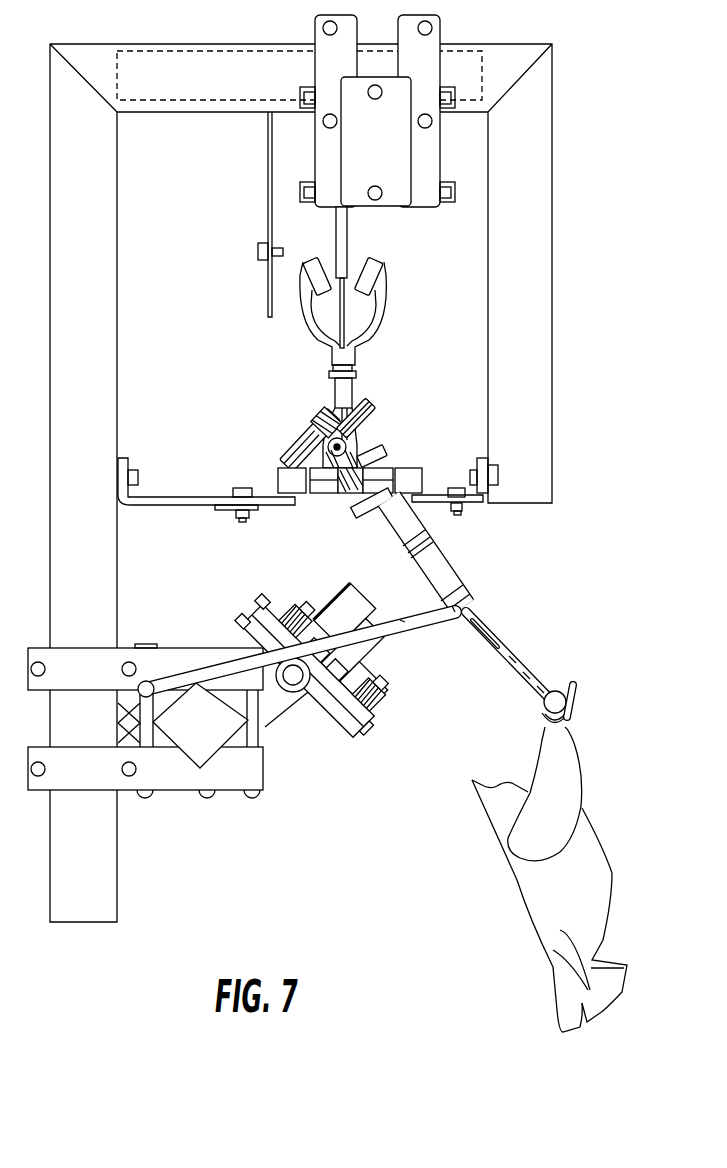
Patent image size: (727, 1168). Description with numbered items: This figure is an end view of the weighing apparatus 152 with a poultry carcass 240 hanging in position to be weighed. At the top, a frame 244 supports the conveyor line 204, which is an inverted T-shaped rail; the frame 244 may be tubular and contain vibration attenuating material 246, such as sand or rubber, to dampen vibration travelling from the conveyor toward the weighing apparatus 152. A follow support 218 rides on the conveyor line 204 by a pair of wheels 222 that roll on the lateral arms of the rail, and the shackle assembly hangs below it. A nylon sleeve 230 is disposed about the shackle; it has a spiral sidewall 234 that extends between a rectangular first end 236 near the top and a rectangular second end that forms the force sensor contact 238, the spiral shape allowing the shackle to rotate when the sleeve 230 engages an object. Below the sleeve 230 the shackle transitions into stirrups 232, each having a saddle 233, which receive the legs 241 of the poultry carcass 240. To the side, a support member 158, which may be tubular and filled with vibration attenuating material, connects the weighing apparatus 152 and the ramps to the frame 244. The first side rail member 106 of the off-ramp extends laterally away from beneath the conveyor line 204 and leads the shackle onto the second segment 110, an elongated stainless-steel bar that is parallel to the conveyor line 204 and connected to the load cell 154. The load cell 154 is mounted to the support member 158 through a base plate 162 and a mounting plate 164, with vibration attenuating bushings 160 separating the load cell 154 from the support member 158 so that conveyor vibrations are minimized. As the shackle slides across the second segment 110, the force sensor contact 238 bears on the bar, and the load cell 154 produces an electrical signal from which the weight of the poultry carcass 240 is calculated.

The first side rail member 106 is at (193, 680).
The second segment 110 is at (437, 612).
The weighing apparatus 152 is at (329, 645).
The load cell 154 is at (345, 605).
The support member 158 is at (192, 748).
The vibration attenuating bushings 160 is at (372, 700).
The base plate 162 is at (267, 592).
The mounting plate 164 is at (243, 628).
The conveyor line 204 is at (345, 310).
The follow support 218 is at (314, 416).
The wheels 222 is at (364, 268).
The sleeve 230 is at (462, 554).
The stirrups 232 is at (575, 682).
The saddle 233 is at (556, 690).
The sidewall 234 is at (422, 545).
The rectangular first end 236 is at (392, 515).
The force sensor contact 238 is at (462, 600).
The poultry carcass 240 is at (540, 895).
The legs 241 is at (548, 758).
The frame 244 is at (173, 120).
The vibration attenuating material 246 is at (235, 83).